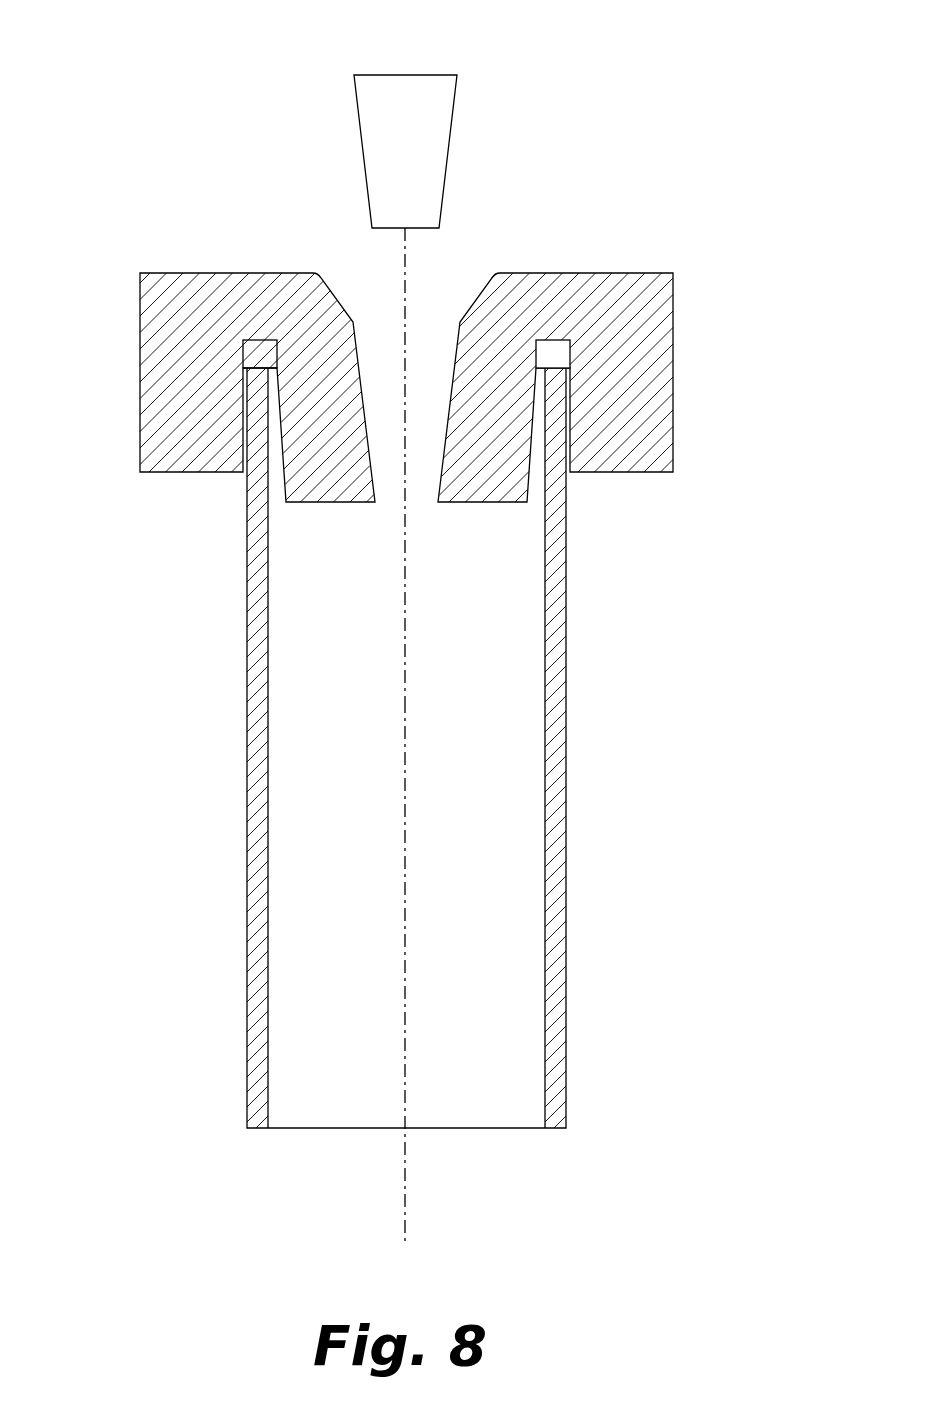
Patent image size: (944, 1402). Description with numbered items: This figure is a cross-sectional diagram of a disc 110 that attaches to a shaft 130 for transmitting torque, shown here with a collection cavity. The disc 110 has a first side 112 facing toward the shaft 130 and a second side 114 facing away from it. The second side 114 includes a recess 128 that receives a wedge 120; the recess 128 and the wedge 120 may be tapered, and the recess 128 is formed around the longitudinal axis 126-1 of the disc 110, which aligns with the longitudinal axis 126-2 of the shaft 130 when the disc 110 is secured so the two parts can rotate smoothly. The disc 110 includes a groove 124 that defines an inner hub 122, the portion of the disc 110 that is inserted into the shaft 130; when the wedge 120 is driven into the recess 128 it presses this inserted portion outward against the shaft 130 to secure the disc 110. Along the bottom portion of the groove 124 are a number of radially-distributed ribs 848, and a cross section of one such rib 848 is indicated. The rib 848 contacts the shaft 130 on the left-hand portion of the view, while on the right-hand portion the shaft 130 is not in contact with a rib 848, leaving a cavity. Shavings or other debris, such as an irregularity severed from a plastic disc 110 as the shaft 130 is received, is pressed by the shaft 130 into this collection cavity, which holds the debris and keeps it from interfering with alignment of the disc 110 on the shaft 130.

The disc 110 is at (630, 273).
The first side 112 is at (354, 748).
The second side 114 is at (401, 360).
The wedge 120 is at (437, 74).
The inner hub 122 is at (527, 507).
The groove 124 is at (557, 349).
The longitudinal axis of the disc 126-1 is at (405, 242).
The longitudinal axis of the shaft 126-2 is at (405, 1193).
The recess 128 is at (495, 273).
The shaft 130 is at (565, 910).
The rib 848 is at (260, 354).